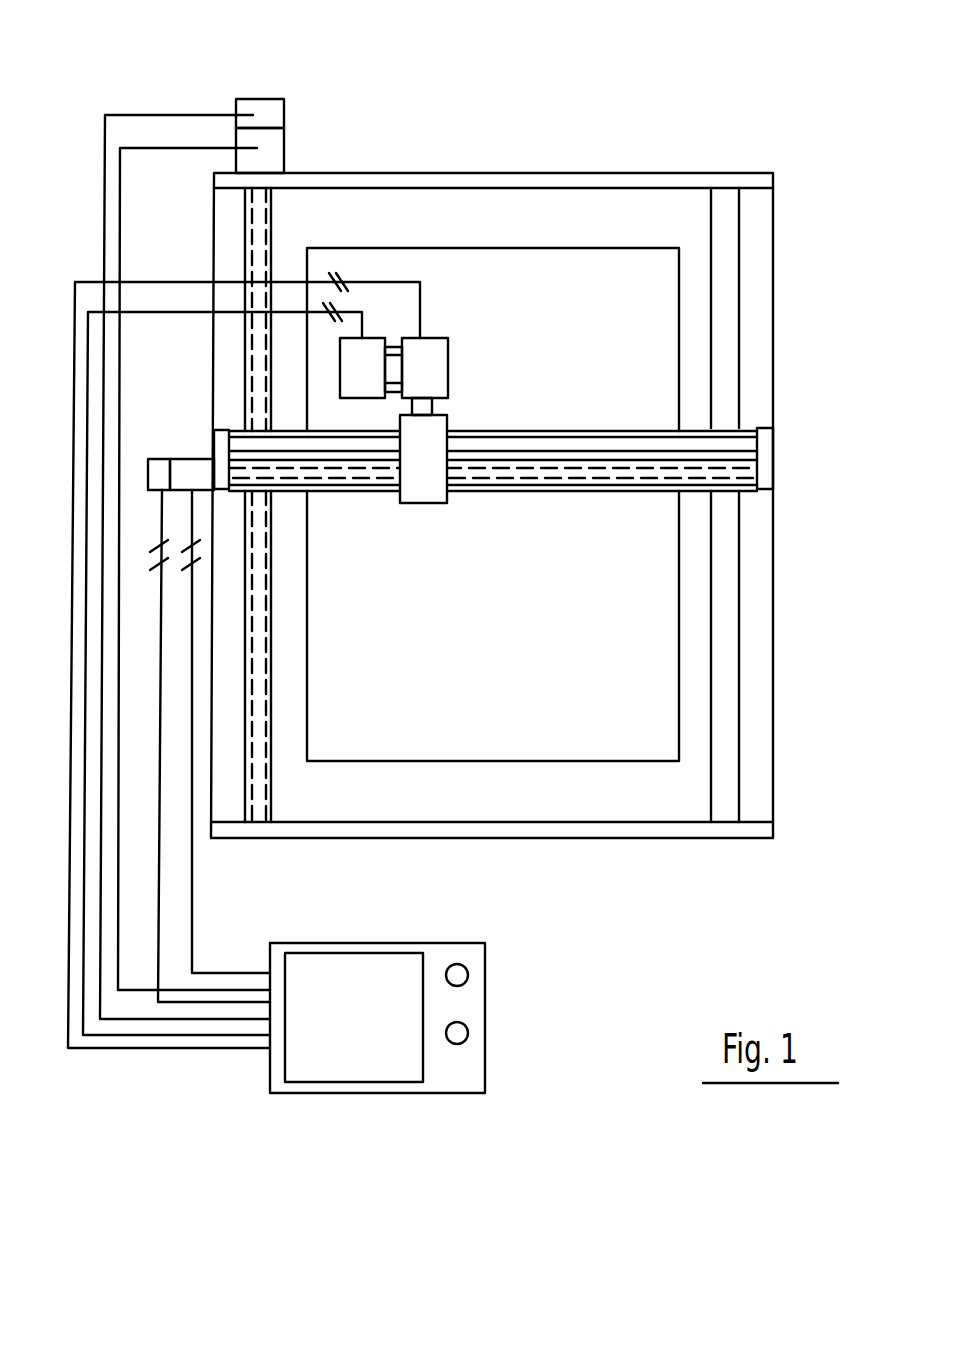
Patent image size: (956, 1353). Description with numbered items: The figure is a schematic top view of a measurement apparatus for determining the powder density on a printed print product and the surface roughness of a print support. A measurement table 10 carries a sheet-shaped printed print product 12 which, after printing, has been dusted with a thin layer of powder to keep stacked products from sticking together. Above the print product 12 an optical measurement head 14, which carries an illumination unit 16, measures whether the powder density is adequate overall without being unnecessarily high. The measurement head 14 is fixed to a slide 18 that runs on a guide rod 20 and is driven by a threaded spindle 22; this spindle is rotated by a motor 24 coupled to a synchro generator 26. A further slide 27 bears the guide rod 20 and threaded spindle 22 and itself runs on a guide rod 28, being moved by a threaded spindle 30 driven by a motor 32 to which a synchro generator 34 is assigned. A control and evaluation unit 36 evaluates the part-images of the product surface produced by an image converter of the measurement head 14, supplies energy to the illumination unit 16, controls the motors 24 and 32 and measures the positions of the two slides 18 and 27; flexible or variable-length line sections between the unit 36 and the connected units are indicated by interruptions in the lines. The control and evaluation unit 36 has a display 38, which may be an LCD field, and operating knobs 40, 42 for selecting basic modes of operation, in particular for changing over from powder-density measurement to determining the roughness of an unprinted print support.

The measurement table 10 is at (750, 635).
The printed print product 12 is at (648, 717).
The optical measurement head 14 is at (430, 367).
The illumination unit 16 is at (350, 365).
The slide 18 is at (417, 482).
The guide rod 20 is at (475, 443).
The threaded spindle 22 is at (563, 470).
The motor 24 is at (187, 472).
The synchro generator 26 is at (162, 473).
The slide 27 is at (618, 492).
The guide rod 28 is at (720, 773).
The threaded spindle 30 is at (257, 683).
The motor 32 is at (273, 162).
The synchro generator 34 is at (256, 108).
The control and evaluation unit 36 is at (315, 1098).
The display 38 is at (360, 1047).
The operating knob 40 is at (462, 973).
The operating knob 42 is at (462, 1033).